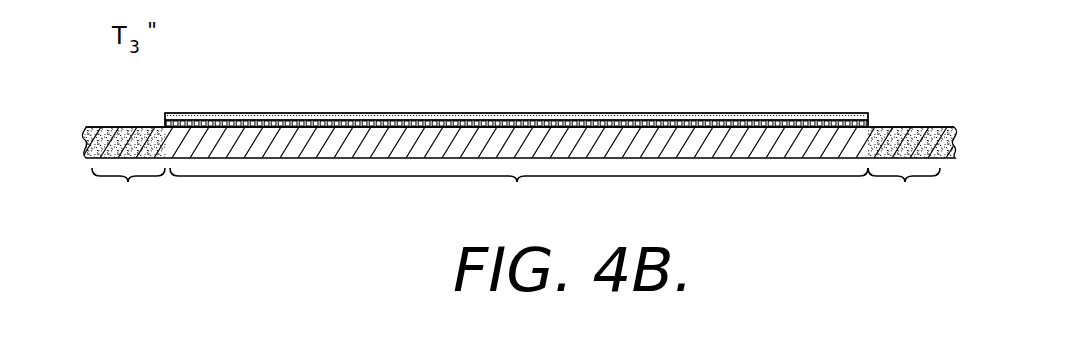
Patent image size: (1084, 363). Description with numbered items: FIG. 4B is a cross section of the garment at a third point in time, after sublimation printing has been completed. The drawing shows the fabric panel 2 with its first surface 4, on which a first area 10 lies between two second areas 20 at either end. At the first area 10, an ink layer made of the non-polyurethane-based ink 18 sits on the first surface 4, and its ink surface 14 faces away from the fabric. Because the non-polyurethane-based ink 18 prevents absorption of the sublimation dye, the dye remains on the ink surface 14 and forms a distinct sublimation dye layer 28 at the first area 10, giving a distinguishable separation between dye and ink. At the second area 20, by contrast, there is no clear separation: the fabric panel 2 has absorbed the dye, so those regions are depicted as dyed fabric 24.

The fabric panel 2 is at (75, 128).
The first surface 4 is at (88, 122).
The first area 10 is at (519, 193).
The ink surface 14 is at (705, 115).
The non-polyurethane-based ink 18 is at (516, 94).
The second area 20 is at (516, 193).
The dyed fabric 24 is at (108, 126).
The sublimation dye layer 28 is at (232, 126).